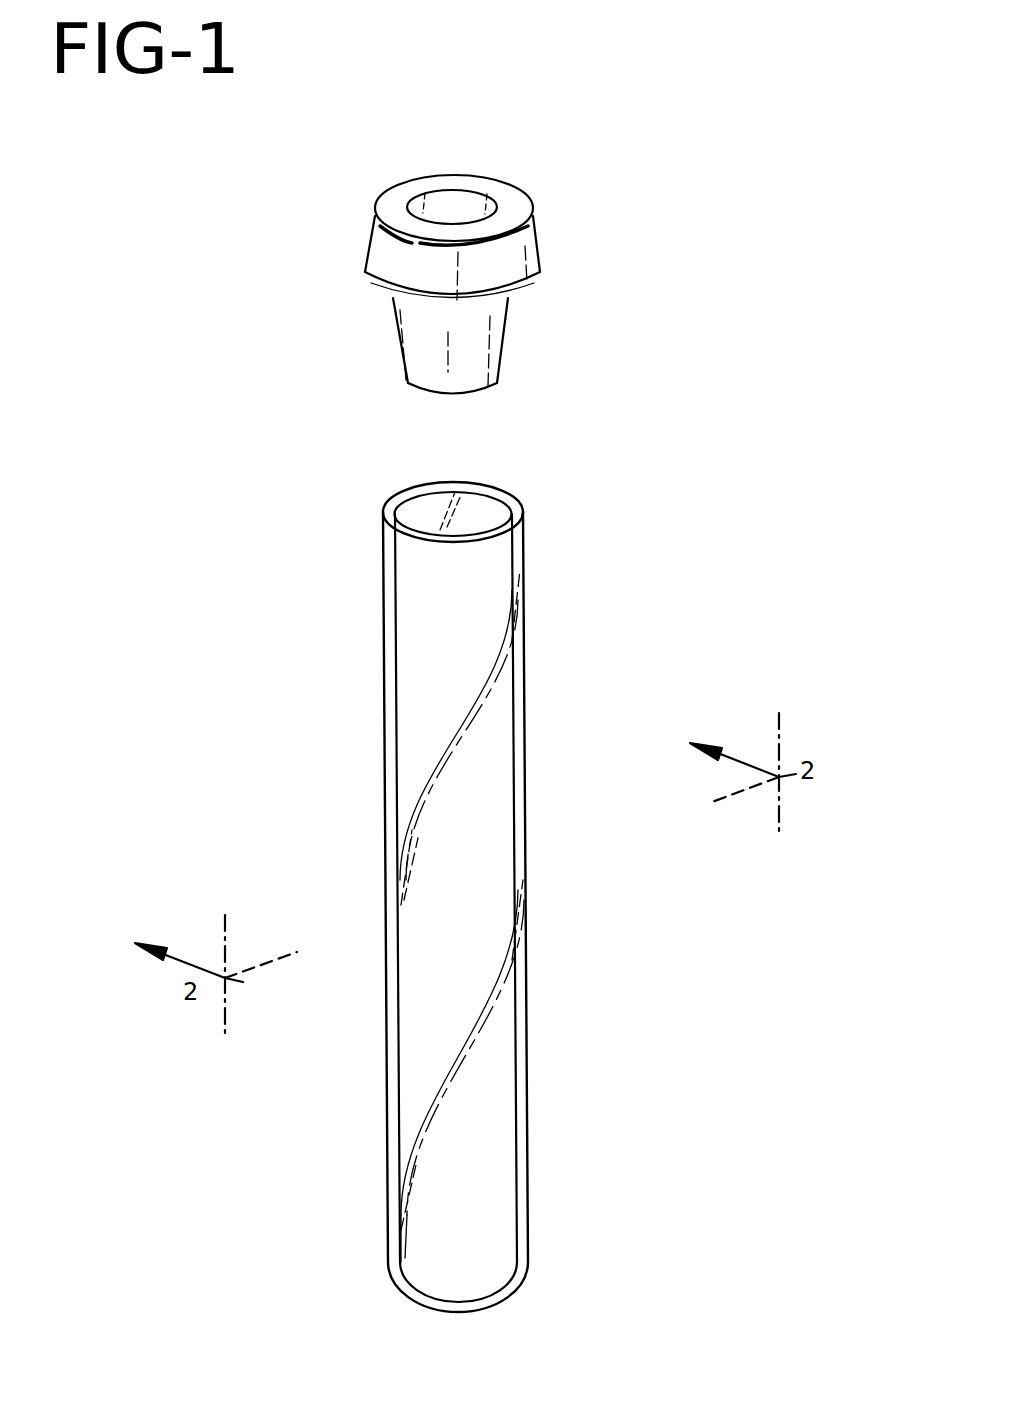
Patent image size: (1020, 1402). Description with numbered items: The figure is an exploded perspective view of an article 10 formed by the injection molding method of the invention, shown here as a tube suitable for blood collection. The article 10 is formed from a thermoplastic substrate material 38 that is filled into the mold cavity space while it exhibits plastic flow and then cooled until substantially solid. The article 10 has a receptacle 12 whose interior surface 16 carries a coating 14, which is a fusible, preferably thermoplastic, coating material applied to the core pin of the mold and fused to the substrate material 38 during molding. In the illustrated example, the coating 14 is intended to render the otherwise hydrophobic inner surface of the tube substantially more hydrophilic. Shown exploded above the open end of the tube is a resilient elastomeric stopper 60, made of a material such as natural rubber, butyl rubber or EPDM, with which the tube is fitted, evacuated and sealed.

The article 10 is at (737, 1137).
The receptacle 12 is at (497, 862).
The coating 14 is at (485, 507).
The interior surface 16 is at (400, 613).
The thermoplastic substrate material 38 is at (524, 612).
The resilient elastomeric stopper 60 is at (385, 240).